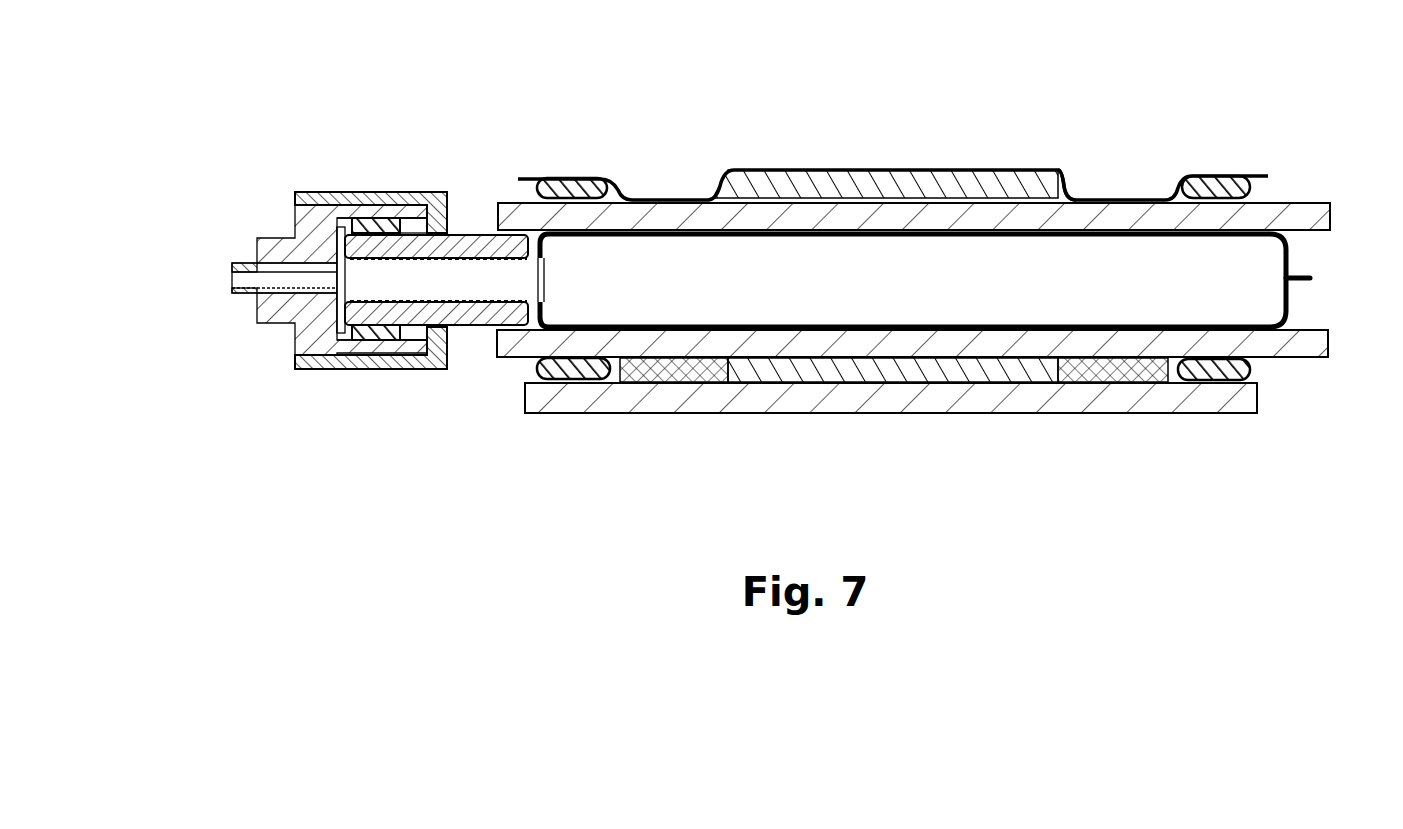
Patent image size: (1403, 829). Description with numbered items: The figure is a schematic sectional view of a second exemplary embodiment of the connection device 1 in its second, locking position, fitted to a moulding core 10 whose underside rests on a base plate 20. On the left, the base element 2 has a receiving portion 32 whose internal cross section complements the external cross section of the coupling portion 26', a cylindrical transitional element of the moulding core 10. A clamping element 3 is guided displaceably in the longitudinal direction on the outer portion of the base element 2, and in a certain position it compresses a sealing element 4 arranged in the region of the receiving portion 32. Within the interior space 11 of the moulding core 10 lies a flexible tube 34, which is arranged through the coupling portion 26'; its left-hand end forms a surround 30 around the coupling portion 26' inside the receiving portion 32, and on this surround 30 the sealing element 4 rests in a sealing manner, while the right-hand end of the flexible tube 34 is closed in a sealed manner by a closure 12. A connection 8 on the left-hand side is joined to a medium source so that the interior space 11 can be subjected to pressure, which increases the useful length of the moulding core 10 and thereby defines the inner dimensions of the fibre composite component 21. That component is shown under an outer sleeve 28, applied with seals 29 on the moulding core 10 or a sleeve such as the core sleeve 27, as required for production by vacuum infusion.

The connection device 1 is at (482, 110).
The base element 2 is at (271, 238).
The clamping element 3 is at (335, 191).
The sealing element 4 is at (397, 191).
The connection 8 is at (245, 295).
The moulding core 10 is at (1295, 215).
The interior space 11 is at (1265, 300).
The closure 12 is at (1290, 252).
The base plate 20 is at (932, 390).
The fibre composite component 21 is at (950, 171).
The coupling portion 26' is at (432, 313).
The core sleeve 27 is at (338, 306).
The outer sleeve 28 is at (1060, 172).
The seal 29 is at (580, 178).
The surround 30 is at (376, 340).
The receiving portion 32 is at (370, 168).
The flexible tube 34 is at (748, 333).